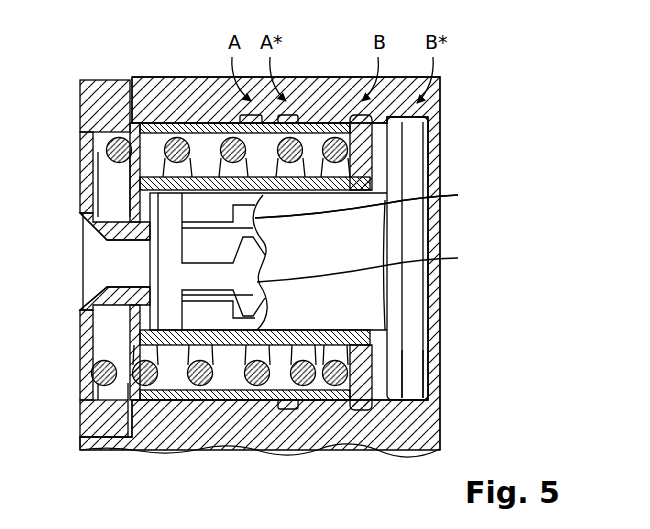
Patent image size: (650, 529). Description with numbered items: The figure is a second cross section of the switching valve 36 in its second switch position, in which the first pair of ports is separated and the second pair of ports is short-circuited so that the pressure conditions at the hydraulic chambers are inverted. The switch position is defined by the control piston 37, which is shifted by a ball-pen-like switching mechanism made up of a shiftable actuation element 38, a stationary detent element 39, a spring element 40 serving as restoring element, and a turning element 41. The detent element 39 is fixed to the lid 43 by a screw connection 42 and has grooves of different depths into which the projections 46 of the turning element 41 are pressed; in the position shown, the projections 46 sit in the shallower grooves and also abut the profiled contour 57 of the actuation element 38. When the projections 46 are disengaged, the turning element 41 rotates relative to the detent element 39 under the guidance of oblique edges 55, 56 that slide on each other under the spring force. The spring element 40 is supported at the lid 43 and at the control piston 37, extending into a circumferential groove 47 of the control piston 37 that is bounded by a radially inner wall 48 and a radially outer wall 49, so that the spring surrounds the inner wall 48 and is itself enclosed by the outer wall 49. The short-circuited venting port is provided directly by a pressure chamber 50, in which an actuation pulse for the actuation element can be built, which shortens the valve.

The switching valve 36 is at (470, 67).
The control piston 37 is at (390, 158).
The actuation element 38 is at (358, 240).
The detent element 39 is at (210, 242).
The spring element 40 is at (107, 150).
The turning element 41 is at (170, 252).
The screw connection 42 is at (90, 240).
The lid 43 is at (88, 113).
The projection 46 is at (207, 278).
The circumferential groove 47 is at (236, 381).
The radially inner wall 48 is at (337, 182).
The radially outer wall 49 is at (320, 125).
The pressure chamber 50 is at (415, 387).
The oblique edge 55 is at (373, 201).
The oblique edge 56 is at (386, 201).
The profiled contour 57 is at (371, 266).